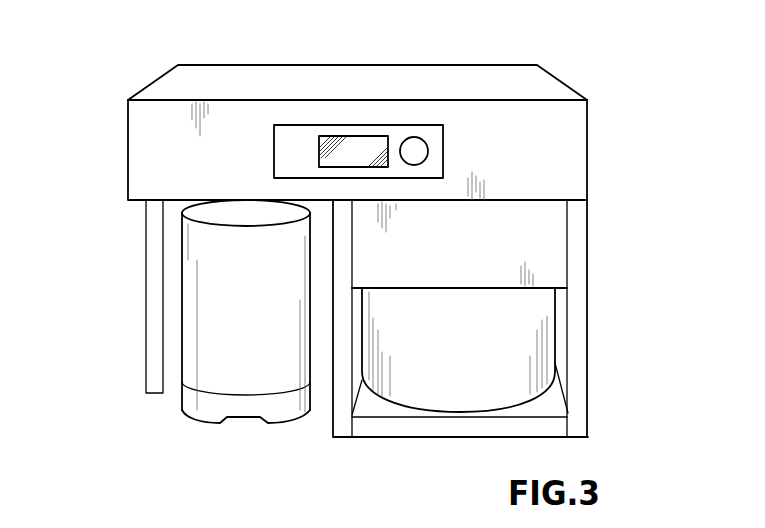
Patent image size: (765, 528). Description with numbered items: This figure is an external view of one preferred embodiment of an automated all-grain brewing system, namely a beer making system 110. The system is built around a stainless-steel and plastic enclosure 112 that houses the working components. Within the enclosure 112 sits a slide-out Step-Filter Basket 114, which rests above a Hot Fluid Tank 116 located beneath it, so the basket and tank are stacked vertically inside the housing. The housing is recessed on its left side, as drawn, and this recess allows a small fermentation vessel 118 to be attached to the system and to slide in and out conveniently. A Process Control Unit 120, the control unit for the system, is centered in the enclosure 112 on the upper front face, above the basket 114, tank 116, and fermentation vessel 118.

The beer making system 110 is at (551, 36).
The enclosure 112 is at (582, 152).
The slide-out Step-Filter Basket 114 is at (532, 245).
The Hot Fluid Tank 116 is at (532, 350).
The fermentation vessel 118 is at (215, 287).
The Process Control Unit 120 is at (443, 151).